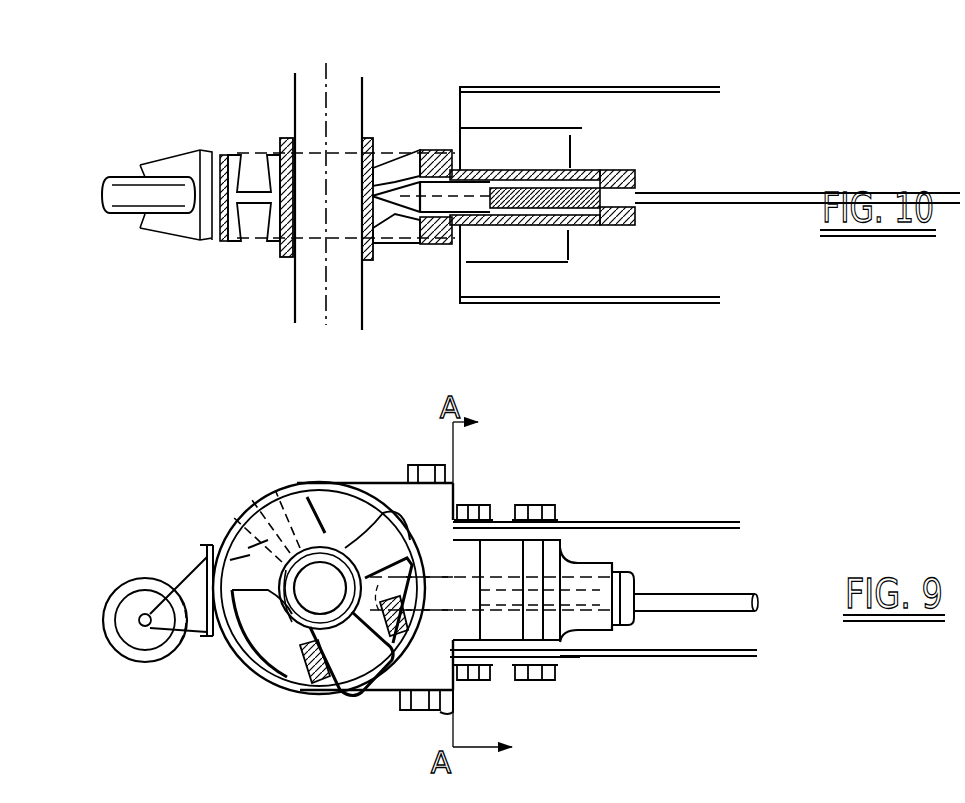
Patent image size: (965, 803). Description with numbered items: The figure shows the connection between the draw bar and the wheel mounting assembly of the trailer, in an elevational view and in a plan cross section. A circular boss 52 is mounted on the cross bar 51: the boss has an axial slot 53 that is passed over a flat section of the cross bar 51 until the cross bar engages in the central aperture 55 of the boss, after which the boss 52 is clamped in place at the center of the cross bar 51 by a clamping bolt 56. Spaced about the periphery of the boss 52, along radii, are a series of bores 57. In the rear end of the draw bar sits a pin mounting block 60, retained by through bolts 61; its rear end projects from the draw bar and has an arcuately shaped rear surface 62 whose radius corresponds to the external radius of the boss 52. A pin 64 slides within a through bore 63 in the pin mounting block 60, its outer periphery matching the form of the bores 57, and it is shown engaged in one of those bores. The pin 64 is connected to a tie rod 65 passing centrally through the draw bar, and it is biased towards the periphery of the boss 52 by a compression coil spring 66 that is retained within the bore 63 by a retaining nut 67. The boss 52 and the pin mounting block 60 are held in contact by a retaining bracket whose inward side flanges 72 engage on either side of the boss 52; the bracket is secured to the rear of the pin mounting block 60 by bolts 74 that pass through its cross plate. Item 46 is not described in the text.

In FIG. 10, the caster assembly 46 is at (250, 272).
In FIG. 9, the caster assembly 46 is at (255, 445).
In FIG. 10, the cross bar 51 is at (335, 83).
In FIG. 9, the cross bar 51 is at (290, 610).
In FIG. 10, the circular boss 52 is at (285, 138).
In FIG. 9, the circular boss 52 is at (287, 660).
In FIG. 9, the axial slot 53 is at (363, 660).
In FIG. 9, the central aperture 55 is at (325, 572).
In FIG. 9, the clamping bolt 56 is at (308, 672).
In FIG. 10, the bores 57 is at (376, 168).
In FIG. 9, the bores 57 is at (250, 537).
In FIG. 9, the pin mounting block 60 is at (502, 537).
In FIG. 9, the through bolts 61 is at (548, 505).
In FIG. 9, the arcuately shaped rear surface 62 is at (373, 525).
In FIG. 9, the through bore 63 is at (507, 608).
In FIG. 10, the pin 64 is at (447, 187).
In FIG. 10, the tie rod 65 is at (705, 192).
In FIG. 9, the tie rod 65 is at (727, 602).
In FIG. 10, the compression coil spring 66 is at (580, 197).
In FIG. 9, the retaining nut 67 is at (622, 575).
In FIG. 10, the inward side flanges 72 is at (224, 157).
In FIG. 9, the bolts 74 is at (467, 717).